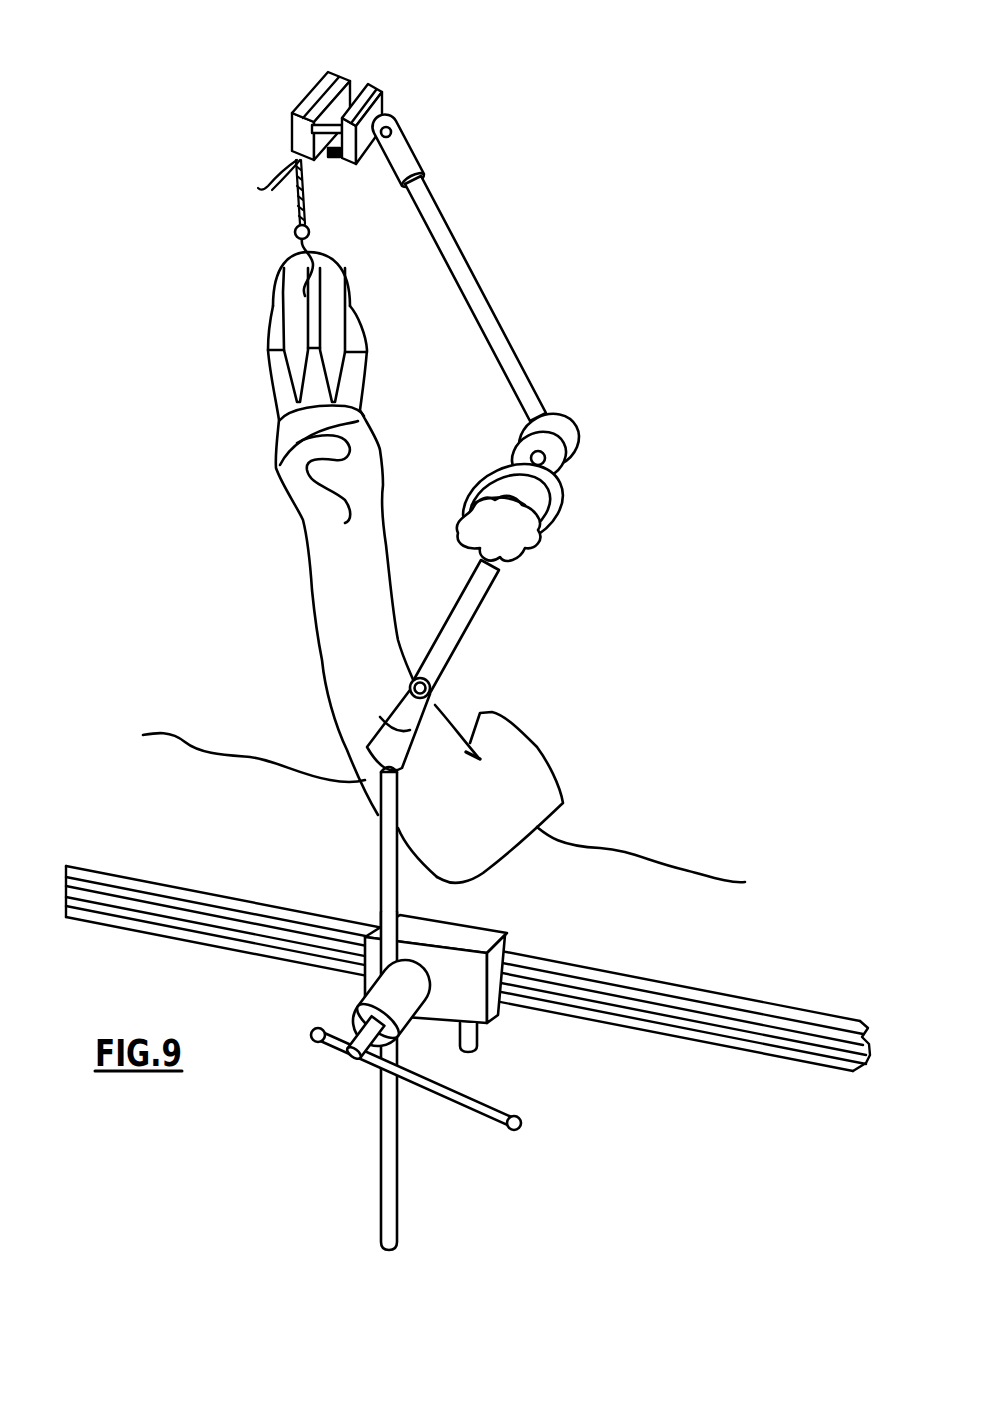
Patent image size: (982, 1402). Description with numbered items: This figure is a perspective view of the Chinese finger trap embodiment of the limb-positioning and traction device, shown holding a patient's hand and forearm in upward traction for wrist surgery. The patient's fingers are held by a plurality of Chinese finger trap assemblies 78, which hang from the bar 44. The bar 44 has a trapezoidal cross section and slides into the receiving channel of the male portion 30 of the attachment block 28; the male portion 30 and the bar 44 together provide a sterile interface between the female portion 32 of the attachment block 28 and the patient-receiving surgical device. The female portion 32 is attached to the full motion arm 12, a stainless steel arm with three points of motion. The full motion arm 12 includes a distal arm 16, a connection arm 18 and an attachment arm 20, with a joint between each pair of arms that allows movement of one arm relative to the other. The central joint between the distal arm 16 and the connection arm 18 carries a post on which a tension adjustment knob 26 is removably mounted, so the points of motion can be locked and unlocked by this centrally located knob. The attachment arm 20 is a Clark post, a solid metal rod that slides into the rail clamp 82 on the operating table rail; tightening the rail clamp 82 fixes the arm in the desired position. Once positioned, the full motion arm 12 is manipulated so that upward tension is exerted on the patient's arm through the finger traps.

The full motion arm 12 is at (550, 383).
The distal arm 16 is at (466, 283).
The connection arm 18 is at (457, 630).
The attachment arm 20 is at (390, 1175).
The tension adjustment knob 26 is at (505, 545).
The attachment block 28 is at (394, 60).
The male portion 30 is at (357, 92).
The female portion 32 is at (373, 108).
The bar 44 is at (314, 157).
The Chinese finger trap assembly 78 is at (280, 275).
The rail clamp 82 is at (478, 1012).